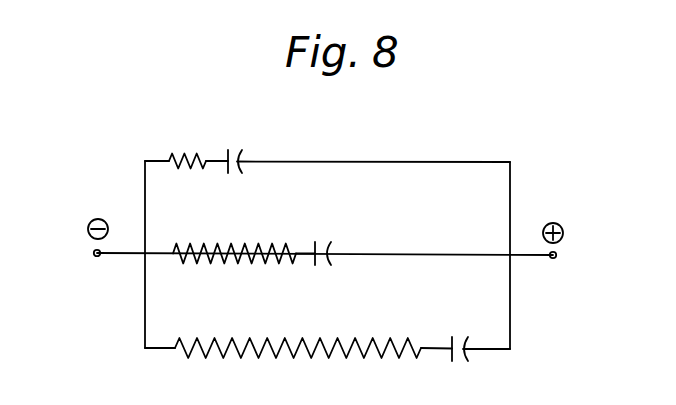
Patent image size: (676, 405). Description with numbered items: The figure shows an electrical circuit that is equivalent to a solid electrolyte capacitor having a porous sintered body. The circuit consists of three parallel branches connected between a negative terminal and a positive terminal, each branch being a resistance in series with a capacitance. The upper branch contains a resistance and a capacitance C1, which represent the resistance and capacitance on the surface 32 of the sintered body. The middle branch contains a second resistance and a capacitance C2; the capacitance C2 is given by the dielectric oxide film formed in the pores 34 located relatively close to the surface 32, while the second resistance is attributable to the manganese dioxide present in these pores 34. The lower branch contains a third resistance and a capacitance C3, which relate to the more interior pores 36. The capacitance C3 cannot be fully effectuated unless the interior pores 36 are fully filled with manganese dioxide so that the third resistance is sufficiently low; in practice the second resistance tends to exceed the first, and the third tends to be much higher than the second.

The surface 32 is at (190, 144).
The capacitance C1 is at (369, 146).
The pores 34 is at (234, 238).
The capacitance C2 is at (325, 239).
The interior pores 36 is at (298, 333).
The capacitance C3 is at (476, 335).